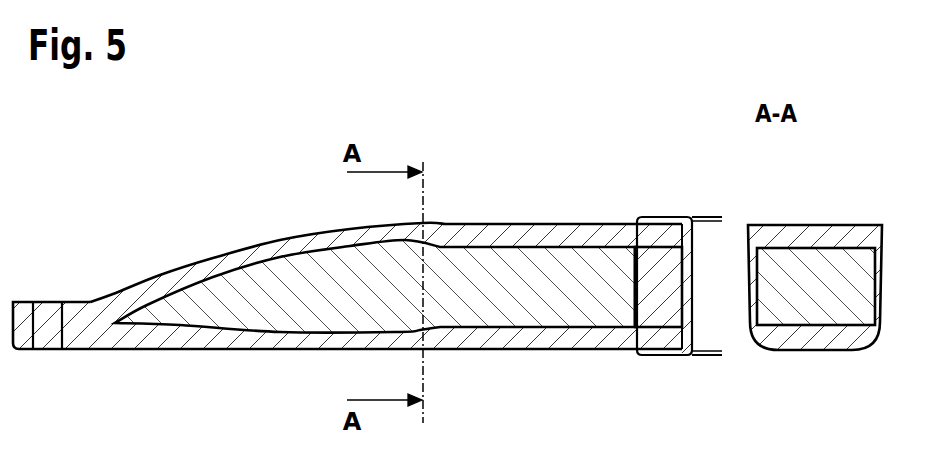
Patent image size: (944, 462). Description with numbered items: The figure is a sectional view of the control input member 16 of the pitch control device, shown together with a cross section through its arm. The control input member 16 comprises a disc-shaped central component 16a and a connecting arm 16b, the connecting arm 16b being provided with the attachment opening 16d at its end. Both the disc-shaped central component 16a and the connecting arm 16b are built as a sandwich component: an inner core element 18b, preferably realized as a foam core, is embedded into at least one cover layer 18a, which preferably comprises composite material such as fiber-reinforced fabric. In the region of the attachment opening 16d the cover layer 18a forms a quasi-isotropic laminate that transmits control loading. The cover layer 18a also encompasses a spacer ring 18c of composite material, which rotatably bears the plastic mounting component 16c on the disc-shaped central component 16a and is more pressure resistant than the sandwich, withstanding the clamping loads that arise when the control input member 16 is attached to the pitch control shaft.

The control input member 16 is at (199, 223).
The disc-shaped central component 16a is at (532, 218).
The connecting arm 16b is at (278, 225).
The plastic mounting component 16c is at (680, 216).
The attachment opening 16d is at (48, 322).
The cover layer 18a is at (246, 338).
The inner core element 18b is at (522, 297).
The spacer ring 18c is at (660, 300).